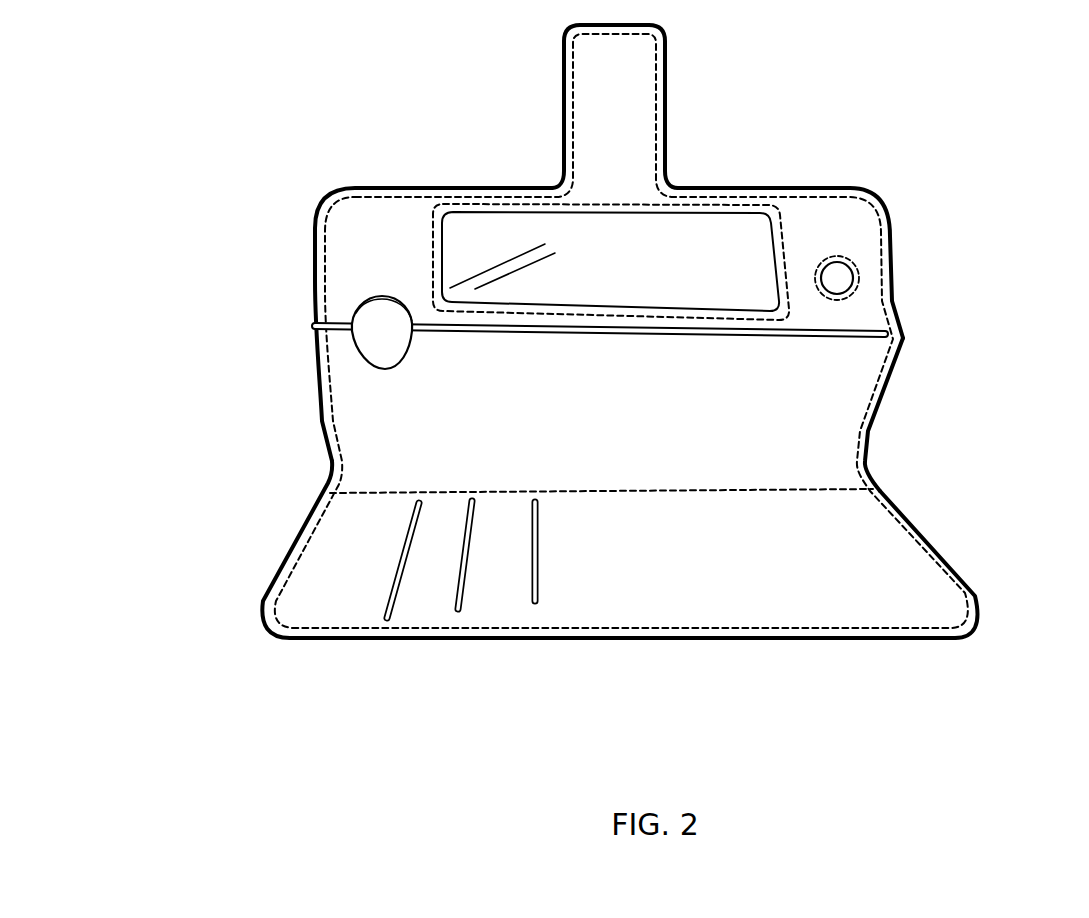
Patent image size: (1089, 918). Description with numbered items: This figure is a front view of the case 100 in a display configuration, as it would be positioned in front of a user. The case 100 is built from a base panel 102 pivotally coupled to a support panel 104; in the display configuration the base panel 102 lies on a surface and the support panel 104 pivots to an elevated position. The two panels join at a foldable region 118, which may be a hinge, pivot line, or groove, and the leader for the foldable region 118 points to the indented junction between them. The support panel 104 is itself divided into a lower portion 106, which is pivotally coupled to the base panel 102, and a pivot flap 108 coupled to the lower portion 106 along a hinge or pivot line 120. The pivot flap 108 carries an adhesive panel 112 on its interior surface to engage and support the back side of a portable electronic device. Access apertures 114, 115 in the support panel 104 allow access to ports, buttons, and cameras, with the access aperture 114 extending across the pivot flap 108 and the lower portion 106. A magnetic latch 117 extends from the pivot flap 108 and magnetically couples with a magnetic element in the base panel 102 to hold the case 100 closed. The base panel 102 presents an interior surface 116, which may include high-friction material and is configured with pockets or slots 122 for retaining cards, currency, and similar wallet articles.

The case 100 is at (194, 195).
The base panel 102 is at (860, 557).
The support panel 104 is at (980, 212).
The lower portion 106 is at (602, 408).
The pivot flap 108 is at (315, 238).
The adhesive panel 112 is at (602, 255).
The access aperture 114 is at (382, 317).
The access aperture 115 is at (838, 282).
The interior surface 116 is at (602, 560).
The magnetic latch 117 is at (594, 109).
The foldable region 118 is at (323, 467).
The pivot line 120 is at (905, 340).
The slots 122 is at (386, 619).